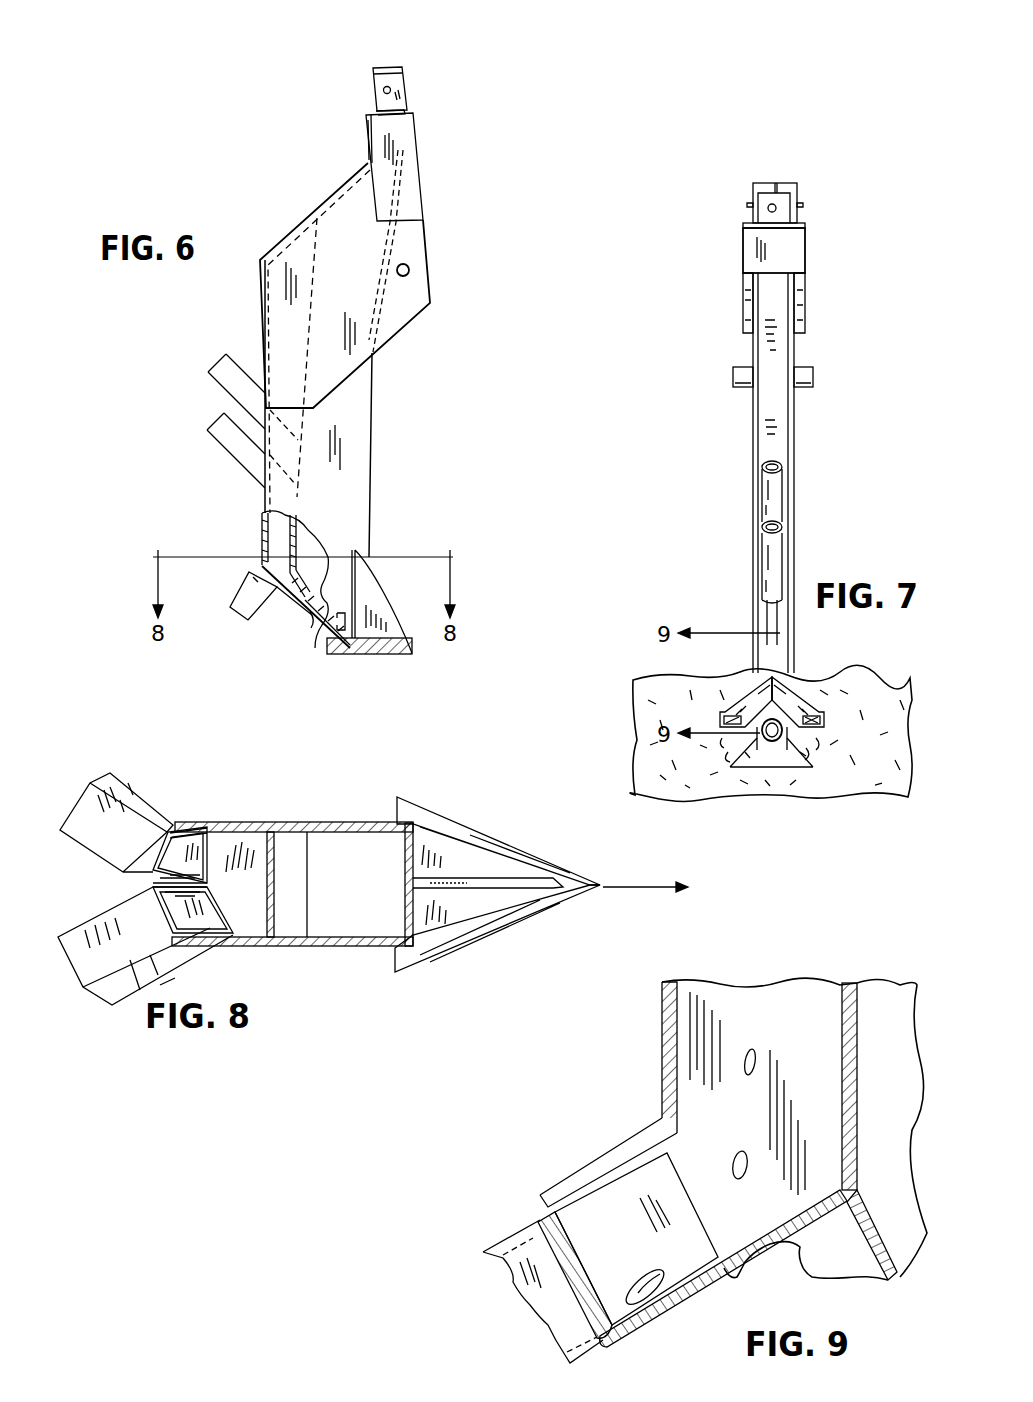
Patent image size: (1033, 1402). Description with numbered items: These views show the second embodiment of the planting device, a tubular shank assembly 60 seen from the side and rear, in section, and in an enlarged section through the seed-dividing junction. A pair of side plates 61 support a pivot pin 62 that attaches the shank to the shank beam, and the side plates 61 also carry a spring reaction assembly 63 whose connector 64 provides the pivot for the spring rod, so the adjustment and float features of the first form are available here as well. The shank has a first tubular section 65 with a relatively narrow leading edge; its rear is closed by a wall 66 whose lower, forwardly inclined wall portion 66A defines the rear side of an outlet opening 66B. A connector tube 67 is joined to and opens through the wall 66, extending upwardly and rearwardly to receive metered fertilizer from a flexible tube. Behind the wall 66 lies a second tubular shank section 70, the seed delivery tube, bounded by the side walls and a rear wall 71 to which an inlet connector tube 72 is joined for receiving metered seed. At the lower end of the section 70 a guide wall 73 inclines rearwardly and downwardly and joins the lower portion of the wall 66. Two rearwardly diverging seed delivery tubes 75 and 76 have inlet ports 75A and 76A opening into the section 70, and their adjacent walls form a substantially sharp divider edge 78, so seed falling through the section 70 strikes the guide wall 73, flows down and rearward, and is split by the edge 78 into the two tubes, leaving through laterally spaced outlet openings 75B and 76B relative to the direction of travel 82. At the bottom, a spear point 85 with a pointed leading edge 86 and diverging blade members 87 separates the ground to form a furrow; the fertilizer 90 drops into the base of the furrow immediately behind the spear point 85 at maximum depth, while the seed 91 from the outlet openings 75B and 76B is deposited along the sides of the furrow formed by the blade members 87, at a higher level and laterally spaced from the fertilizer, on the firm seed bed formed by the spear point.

In FIG. 6, the shank assembly 60 is at (412, 322).
In FIG. 6, the side plates 61 is at (405, 197).
In FIG. 7, the side plates 61 is at (752, 340).
In FIG. 6, the pivot pin 62 is at (409, 265).
In FIG. 7, the pivot pin 62 is at (733, 371).
In FIG. 6, the spring reaction assembly 63 is at (402, 137).
In FIG. 7, the spring reaction assembly 63 is at (748, 292).
In FIG. 6, the connector 64 is at (372, 90).
In FIG. 7, the connector 64 is at (775, 203).
In FIG. 6, the first tubular section 65 is at (346, 450).
In FIG. 9, the first tubular section 65 is at (882, 1077).
In FIG. 6, the wall 66 is at (314, 303).
In FIG. 8, the wall 66 is at (262, 915).
In FIG. 9, the wall 66 is at (846, 1018).
In FIG. 6, the lower forwardly inclined wall portion 66A is at (295, 600).
In FIG. 8, the lower forwardly inclined wall portion 66A is at (368, 937).
In FIG. 9, the lower forwardly inclined wall portion 66A is at (877, 1217).
In FIG. 6, the outlet opening 66B is at (310, 612).
In FIG. 6, the connector tube 67 is at (224, 358).
In FIG. 7, the connector tube 67 is at (766, 483).
In FIG. 6, the second tubular shank section 70 is at (277, 522).
In FIG. 9, the second tubular shank section 70 is at (755, 1003).
In FIG. 6, the rear wall 71 is at (260, 533).
In FIG. 9, the rear wall 71 is at (670, 1070).
In FIG. 6, the inlet connector tube 72 is at (220, 416).
In FIG. 7, the inlet connector tube 72 is at (767, 565).
In FIG. 6, the guide wall 73 is at (283, 605).
In FIG. 8, the guide wall 73 is at (228, 875).
In FIG. 9, the guide wall 73 is at (780, 1240).
In FIG. 6, the seed delivery tube 75 is at (248, 592).
In FIG. 7, the seed delivery tube 75 is at (790, 690).
In FIG. 8, the seed delivery tube 75 is at (92, 957).
In FIG. 8, the inlet port 75A is at (188, 918).
In FIG. 7, the outlet opening 75B is at (824, 715).
In FIG. 7, the seed delivery tube 76 is at (760, 688).
In FIG. 8, the seed delivery tube 76 is at (105, 808).
In FIG. 9, the seed delivery tube 76 is at (527, 1238).
In FIG. 8, the inlet port 76A is at (188, 856).
In FIG. 9, the inlet port 76A is at (620, 1203).
In FIG. 7, the outlet opening 76B is at (727, 720).
In FIG. 8, the divider edge 78 is at (150, 872).
In FIG. 9, the divider edge 78 is at (568, 1270).
In FIG. 8, the direction of travel 82 is at (637, 886).
In FIG. 6, the spear point 85 is at (373, 648).
In FIG. 8, the pointed leading edge 86 is at (553, 884).
In FIG. 9, the pointed leading edge 86 is at (587, 1170).
In FIG. 8, the blade members 87 is at (443, 820).
In FIG. 7, the fertilizer 90 is at (772, 745).
In FIG. 7, the seed 91 is at (722, 742).